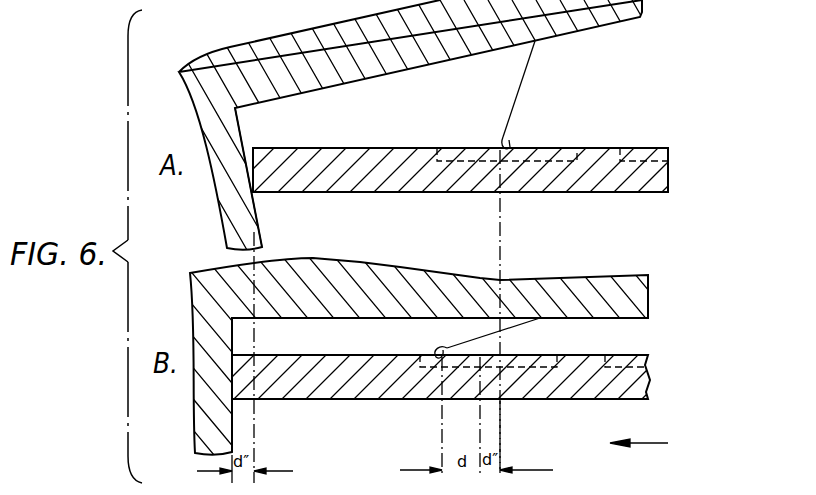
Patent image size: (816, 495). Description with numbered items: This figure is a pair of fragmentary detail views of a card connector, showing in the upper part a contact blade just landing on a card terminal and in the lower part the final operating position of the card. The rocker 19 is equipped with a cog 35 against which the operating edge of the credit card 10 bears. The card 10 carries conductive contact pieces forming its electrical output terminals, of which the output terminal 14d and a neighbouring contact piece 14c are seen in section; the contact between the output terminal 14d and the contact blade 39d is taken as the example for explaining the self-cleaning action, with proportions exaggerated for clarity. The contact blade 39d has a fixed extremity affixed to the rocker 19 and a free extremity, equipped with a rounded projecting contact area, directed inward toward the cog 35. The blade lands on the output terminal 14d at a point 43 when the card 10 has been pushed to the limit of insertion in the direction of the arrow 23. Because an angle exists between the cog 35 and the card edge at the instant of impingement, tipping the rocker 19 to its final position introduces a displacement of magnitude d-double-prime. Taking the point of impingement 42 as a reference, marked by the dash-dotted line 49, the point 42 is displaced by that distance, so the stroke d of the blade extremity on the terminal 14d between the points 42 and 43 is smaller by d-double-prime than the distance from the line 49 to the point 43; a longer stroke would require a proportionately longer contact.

In FIG. 6A, the credit card 10 is at (655, 193).
In FIG. 6B, the credit card 10 is at (630, 399).
In FIG. 6A, the conductive contact piece 14c is at (648, 145).
In FIG. 6B, the conductive contact piece 14c is at (645, 350).
In FIG. 6A, the output terminal 14d is at (555, 147).
In FIG. 6B, the output terminal 14d is at (555, 353).
In FIG. 6A, the rocker 19 is at (642, 12).
In FIG. 6B, the rocker 19 is at (649, 303).
In FIG. 6B, the arrow 23 is at (651, 445).
In FIG. 6A, the cog 35 is at (242, 135).
In FIG. 6B, the cog 35 is at (233, 340).
In FIG. 6A, the contact blade 39d is at (510, 111).
In FIG. 6B, the contact blade 39d is at (478, 338).
In FIG. 6A, the point of impingement 42 is at (510, 152).
In FIG. 6B, the point of impingement 42 is at (480, 355).
In FIG. 6B, the landing point 43 is at (432, 354).
In FIG. 6B, the dash-dotted line 49 is at (503, 407).